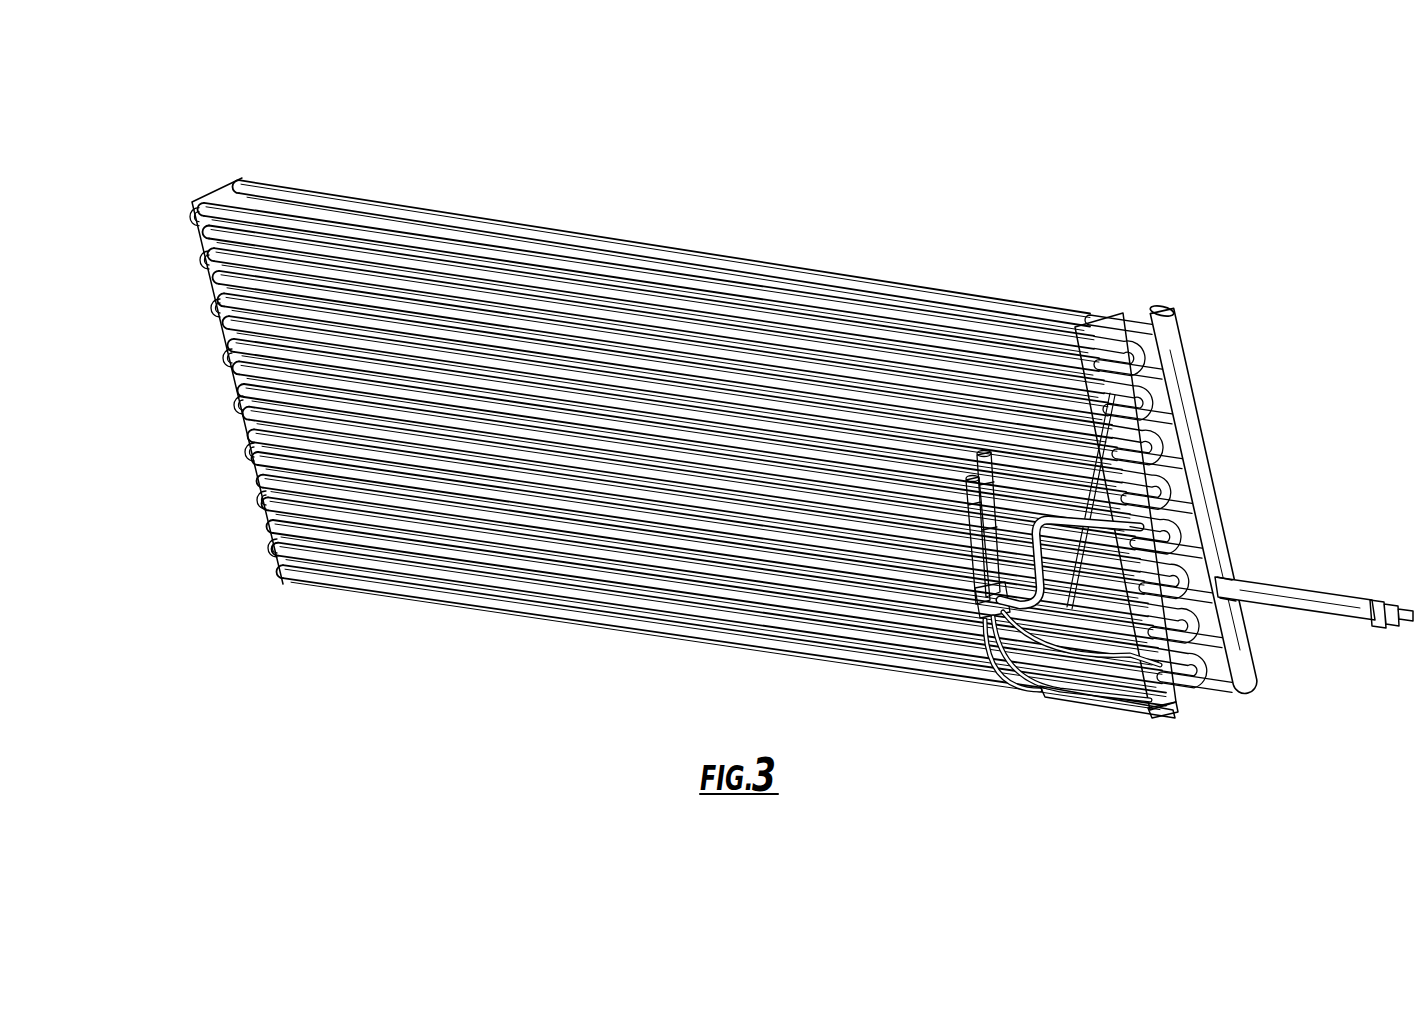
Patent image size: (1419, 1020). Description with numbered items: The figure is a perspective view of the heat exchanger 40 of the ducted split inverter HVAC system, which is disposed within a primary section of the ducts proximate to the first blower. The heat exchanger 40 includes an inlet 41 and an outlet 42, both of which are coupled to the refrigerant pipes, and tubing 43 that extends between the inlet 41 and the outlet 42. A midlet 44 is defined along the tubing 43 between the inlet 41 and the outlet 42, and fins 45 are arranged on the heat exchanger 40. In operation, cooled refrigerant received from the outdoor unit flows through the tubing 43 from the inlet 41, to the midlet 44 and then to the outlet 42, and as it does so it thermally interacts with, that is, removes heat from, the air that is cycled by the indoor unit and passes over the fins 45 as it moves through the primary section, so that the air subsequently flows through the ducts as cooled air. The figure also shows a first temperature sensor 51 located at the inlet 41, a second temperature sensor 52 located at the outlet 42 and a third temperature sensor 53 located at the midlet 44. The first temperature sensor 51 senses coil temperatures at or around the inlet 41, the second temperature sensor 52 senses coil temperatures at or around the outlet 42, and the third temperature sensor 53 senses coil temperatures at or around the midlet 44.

The heat exchanger 40 is at (724, 240).
The inlet 41 is at (1112, 716).
The outlet 42 is at (1290, 578).
The tubing 43 is at (212, 305).
The midlet 44 is at (1225, 669).
The fins 45 is at (271, 542).
The first temperature sensor 51 is at (1147, 714).
The second temperature sensor 52 is at (1247, 590).
The third temperature sensor 53 is at (1193, 672).